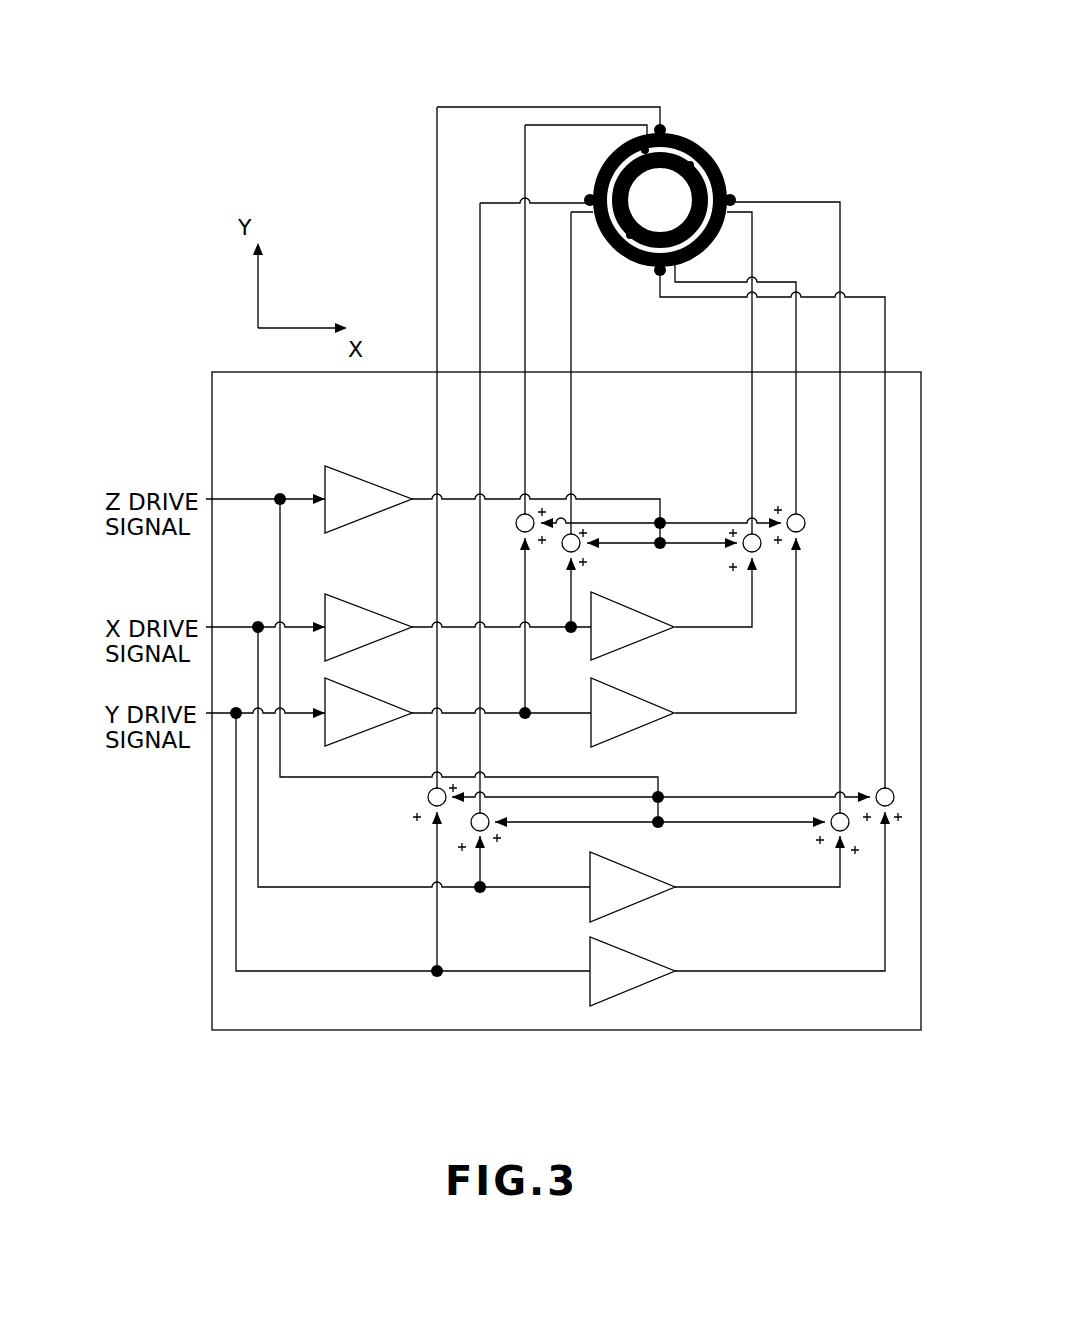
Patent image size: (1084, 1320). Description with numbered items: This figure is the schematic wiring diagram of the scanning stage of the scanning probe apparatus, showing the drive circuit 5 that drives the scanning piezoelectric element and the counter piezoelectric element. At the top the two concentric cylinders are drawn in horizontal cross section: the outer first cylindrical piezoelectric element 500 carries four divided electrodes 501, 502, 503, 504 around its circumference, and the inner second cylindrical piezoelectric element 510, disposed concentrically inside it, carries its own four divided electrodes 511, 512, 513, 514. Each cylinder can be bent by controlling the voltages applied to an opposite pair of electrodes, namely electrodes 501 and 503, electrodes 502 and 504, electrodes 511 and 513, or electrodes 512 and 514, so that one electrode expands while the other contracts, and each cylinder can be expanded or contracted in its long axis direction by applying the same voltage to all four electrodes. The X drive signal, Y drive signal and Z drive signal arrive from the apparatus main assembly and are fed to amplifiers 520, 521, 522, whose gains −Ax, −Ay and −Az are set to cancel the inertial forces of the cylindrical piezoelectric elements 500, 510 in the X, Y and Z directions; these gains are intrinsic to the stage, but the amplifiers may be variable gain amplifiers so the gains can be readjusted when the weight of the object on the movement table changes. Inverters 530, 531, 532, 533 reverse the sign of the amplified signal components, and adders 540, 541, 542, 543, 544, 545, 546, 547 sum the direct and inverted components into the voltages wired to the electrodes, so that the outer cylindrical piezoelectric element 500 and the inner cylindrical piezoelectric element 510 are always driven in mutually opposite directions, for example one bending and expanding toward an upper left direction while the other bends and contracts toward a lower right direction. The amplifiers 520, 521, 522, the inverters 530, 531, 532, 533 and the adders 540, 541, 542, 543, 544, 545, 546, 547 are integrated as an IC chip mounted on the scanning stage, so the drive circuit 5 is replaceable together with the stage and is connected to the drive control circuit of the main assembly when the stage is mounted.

The drive circuit 5 is at (695, 1040).
The first cylindrical piezoelectric element 500 is at (637, 171).
The electrode 501 is at (725, 177).
The electrode 502 is at (647, 263).
The electrode 503 is at (593, 200).
The electrode 504 is at (673, 137).
The second cylindrical piezoelectric element 510 is at (623, 172).
The electrode 511 is at (715, 162).
The electrode 512 is at (623, 240).
The electrode 513 is at (597, 210).
The electrode 514 is at (642, 138).
The amplifier 520 is at (353, 612).
The amplifier 521 is at (360, 697).
The amplifier 522 is at (368, 483).
The inverter 530 is at (617, 613).
The inverter 531 is at (643, 712).
The inverter 532 is at (645, 883).
The inverter 533 is at (650, 968).
The adder 540 is at (575, 537).
The adder 541 is at (747, 537).
The adder 542 is at (528, 515).
The adder 543 is at (792, 517).
The adder 544 is at (485, 817).
The adder 545 is at (837, 817).
The adder 546 is at (440, 793).
The adder 547 is at (878, 793).